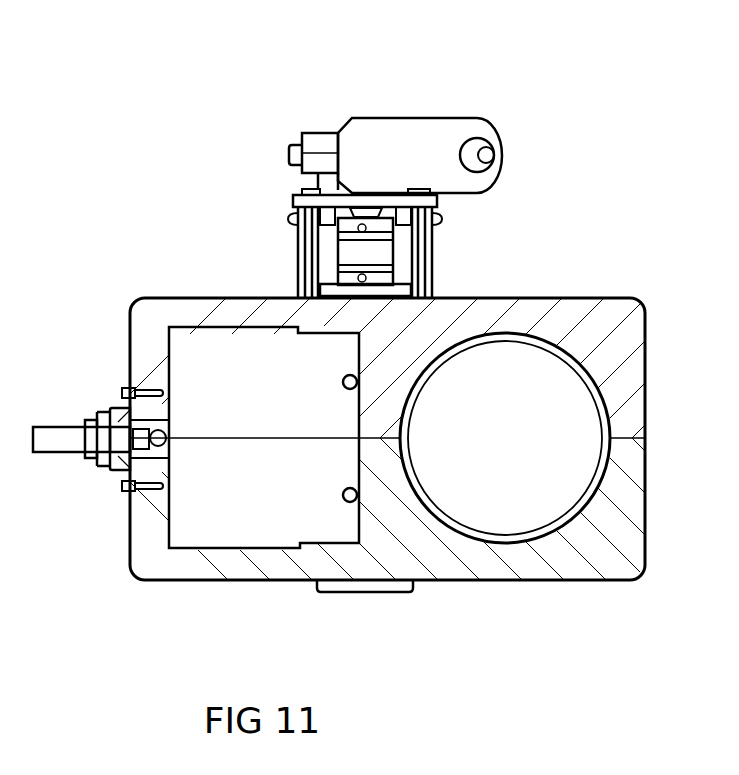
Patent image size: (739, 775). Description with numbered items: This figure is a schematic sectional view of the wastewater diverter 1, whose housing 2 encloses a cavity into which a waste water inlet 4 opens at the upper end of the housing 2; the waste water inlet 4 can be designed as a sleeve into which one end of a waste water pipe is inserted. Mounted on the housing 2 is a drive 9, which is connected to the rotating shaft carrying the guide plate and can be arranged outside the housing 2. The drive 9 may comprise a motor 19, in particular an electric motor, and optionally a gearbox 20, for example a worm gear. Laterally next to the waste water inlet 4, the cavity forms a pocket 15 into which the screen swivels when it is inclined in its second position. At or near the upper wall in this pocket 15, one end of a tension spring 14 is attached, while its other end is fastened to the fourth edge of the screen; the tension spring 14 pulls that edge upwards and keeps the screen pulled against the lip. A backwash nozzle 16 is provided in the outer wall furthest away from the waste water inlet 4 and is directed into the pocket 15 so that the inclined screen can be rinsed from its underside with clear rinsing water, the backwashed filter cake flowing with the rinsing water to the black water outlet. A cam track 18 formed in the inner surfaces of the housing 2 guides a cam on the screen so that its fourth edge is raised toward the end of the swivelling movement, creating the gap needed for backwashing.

The wastewater diverter 1 is at (146, 151).
The housing 2 is at (630, 497).
The waste water inlet 4 is at (592, 418).
The drive 9 is at (382, 99).
The tension spring 14 is at (343, 382).
The pocket 15 is at (180, 505).
The backwash nozzle 16 is at (115, 415).
The cam track 18 is at (300, 543).
The motor 19 is at (433, 140).
The gearbox 20 is at (320, 143).